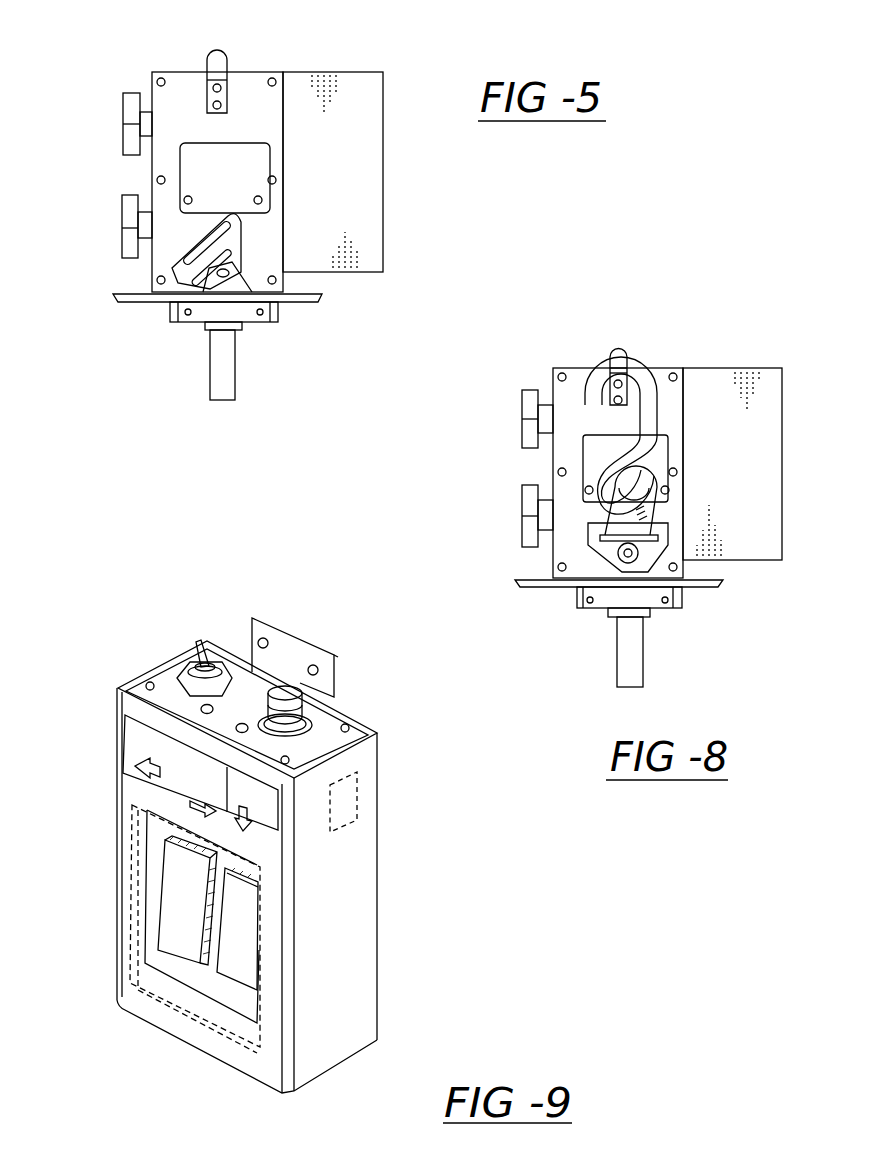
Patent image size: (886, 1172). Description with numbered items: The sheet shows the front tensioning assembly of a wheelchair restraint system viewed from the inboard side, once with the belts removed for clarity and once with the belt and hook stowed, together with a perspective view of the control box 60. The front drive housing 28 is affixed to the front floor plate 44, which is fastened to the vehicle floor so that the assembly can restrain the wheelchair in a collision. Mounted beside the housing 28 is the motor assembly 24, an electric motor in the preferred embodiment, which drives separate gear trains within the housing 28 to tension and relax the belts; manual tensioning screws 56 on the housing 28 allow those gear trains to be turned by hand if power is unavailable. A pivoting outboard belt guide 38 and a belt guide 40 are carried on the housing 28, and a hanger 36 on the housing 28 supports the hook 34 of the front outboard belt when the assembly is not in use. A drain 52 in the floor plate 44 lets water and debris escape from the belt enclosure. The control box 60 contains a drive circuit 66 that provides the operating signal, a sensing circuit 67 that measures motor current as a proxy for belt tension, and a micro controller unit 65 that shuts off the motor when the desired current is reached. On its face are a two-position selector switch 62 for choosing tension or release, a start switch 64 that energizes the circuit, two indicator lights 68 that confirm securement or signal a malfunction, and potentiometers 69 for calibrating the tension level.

In FIG. 5, the motor assembly 24 is at (355, 168).
In FIG. 8, the motor assembly 24 is at (755, 470).
In FIG. 5, the front drive housing 28 is at (275, 72).
In FIG. 8, the front drive housing 28 is at (580, 367).
In FIG. 8, the hook 34 is at (637, 368).
In FIG. 5, the hanger 36 is at (222, 60).
In FIG. 8, the hanger 36 is at (622, 350).
In FIG. 5, the pivoting outboard belt guide 38 is at (241, 237).
In FIG. 8, the pivoting outboard belt guide 38 is at (608, 548).
In FIG. 5, the belt guide 40 is at (237, 258).
In FIG. 5, the front floor plate 44 is at (155, 298).
In FIG. 8, the front floor plate 44 is at (700, 583).
In FIG. 5, the drain 52 is at (222, 380).
In FIG. 8, the drain 52 is at (630, 660).
In FIG. 5, the manual tensioning screws 56 is at (122, 141).
In FIG. 8, the manual tensioning screws 56 is at (525, 400).
In FIG. 9, the control box 60 is at (348, 898).
In FIG. 9, the two-position selector switch 62 is at (199, 640).
In FIG. 9, the start switch 64 is at (292, 700).
In FIG. 9, the micro controller unit 65 is at (185, 972).
In FIG. 9, the drive circuit 66 is at (177, 887).
In FIG. 9, the sensing circuit 67 is at (243, 930).
In FIG. 9, the indicator lights 68 is at (211, 706).
In FIG. 9, the potentiometers 69 is at (355, 780).